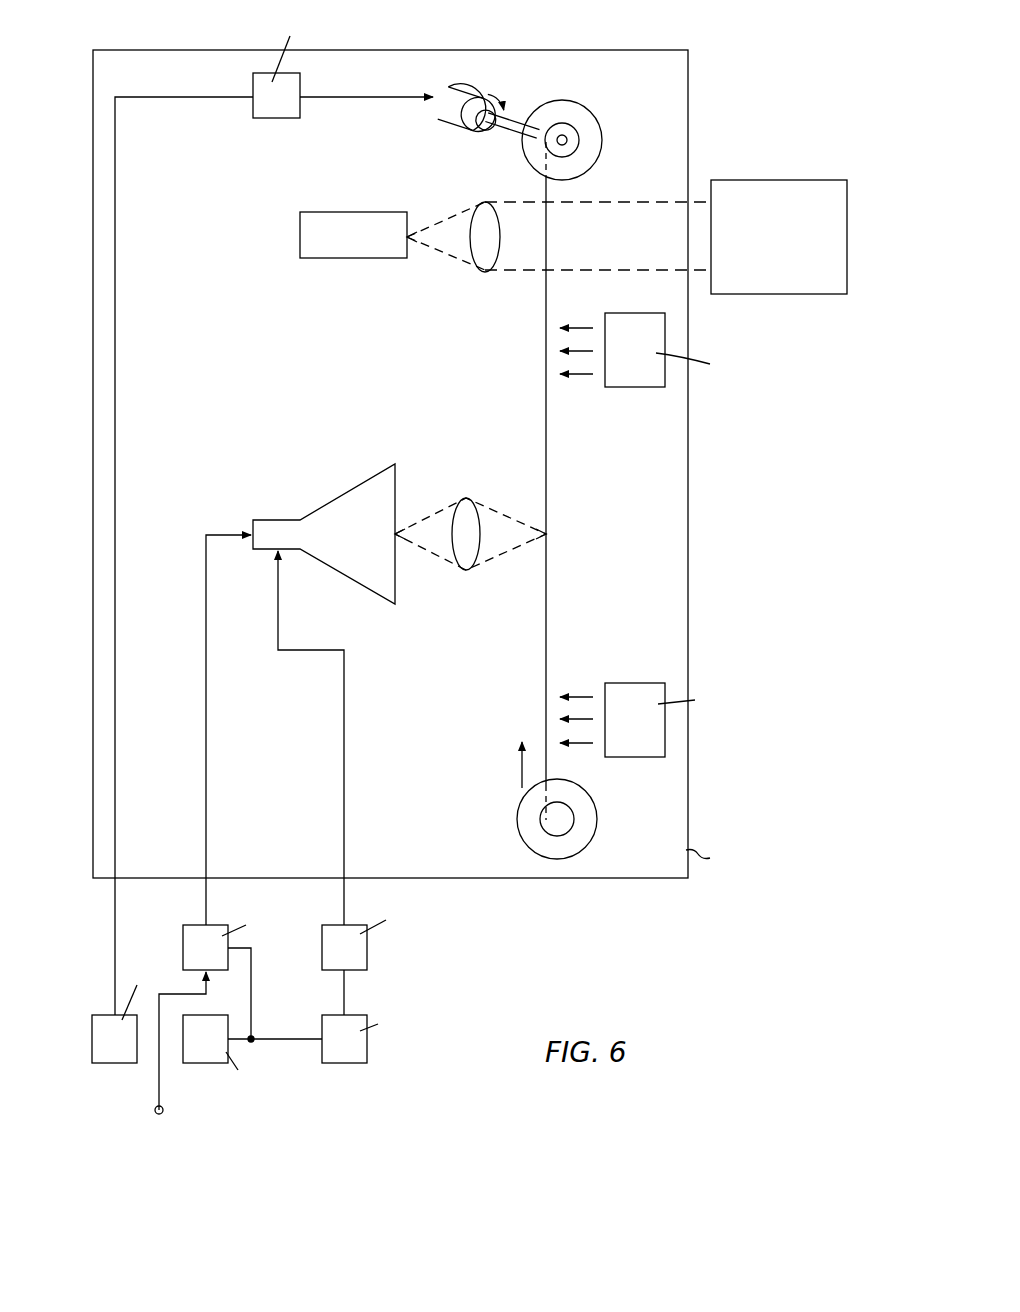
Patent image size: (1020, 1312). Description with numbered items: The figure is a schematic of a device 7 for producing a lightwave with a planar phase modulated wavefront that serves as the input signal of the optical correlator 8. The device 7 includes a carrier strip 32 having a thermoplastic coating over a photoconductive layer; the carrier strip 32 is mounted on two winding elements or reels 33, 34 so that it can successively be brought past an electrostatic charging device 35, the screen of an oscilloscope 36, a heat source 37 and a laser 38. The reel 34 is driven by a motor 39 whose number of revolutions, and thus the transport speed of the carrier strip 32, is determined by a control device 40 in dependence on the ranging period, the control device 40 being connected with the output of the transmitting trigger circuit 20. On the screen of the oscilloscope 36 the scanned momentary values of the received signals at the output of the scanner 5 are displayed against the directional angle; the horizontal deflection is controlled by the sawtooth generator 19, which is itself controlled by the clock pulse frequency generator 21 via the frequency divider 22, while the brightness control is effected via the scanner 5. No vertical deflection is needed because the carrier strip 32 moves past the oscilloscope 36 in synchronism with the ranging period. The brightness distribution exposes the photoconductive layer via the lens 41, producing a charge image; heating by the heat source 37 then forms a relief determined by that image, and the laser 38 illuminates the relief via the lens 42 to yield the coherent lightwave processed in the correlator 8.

The scanner 5 is at (208, 932).
The device 7 is at (678, 813).
The correlator 8 is at (818, 282).
The sawtooth generator 19 is at (360, 958).
The transmitting trigger circuit 20 is at (117, 1063).
The clock pulse frequency generator 21 is at (215, 1063).
The frequency divider 22 is at (349, 1063).
The carrier strip 32 is at (548, 770).
The winding element or reel 33 is at (590, 830).
The winding element or reel 34 is at (600, 143).
The electrostatic charging device 35 is at (620, 688).
The oscilloscope 36 is at (340, 508).
The heat source 37 is at (638, 378).
The laser 38 is at (353, 258).
The motor 39 is at (453, 118).
The control device 40 is at (284, 118).
The lens 41 is at (470, 506).
The lens 42 is at (485, 258).